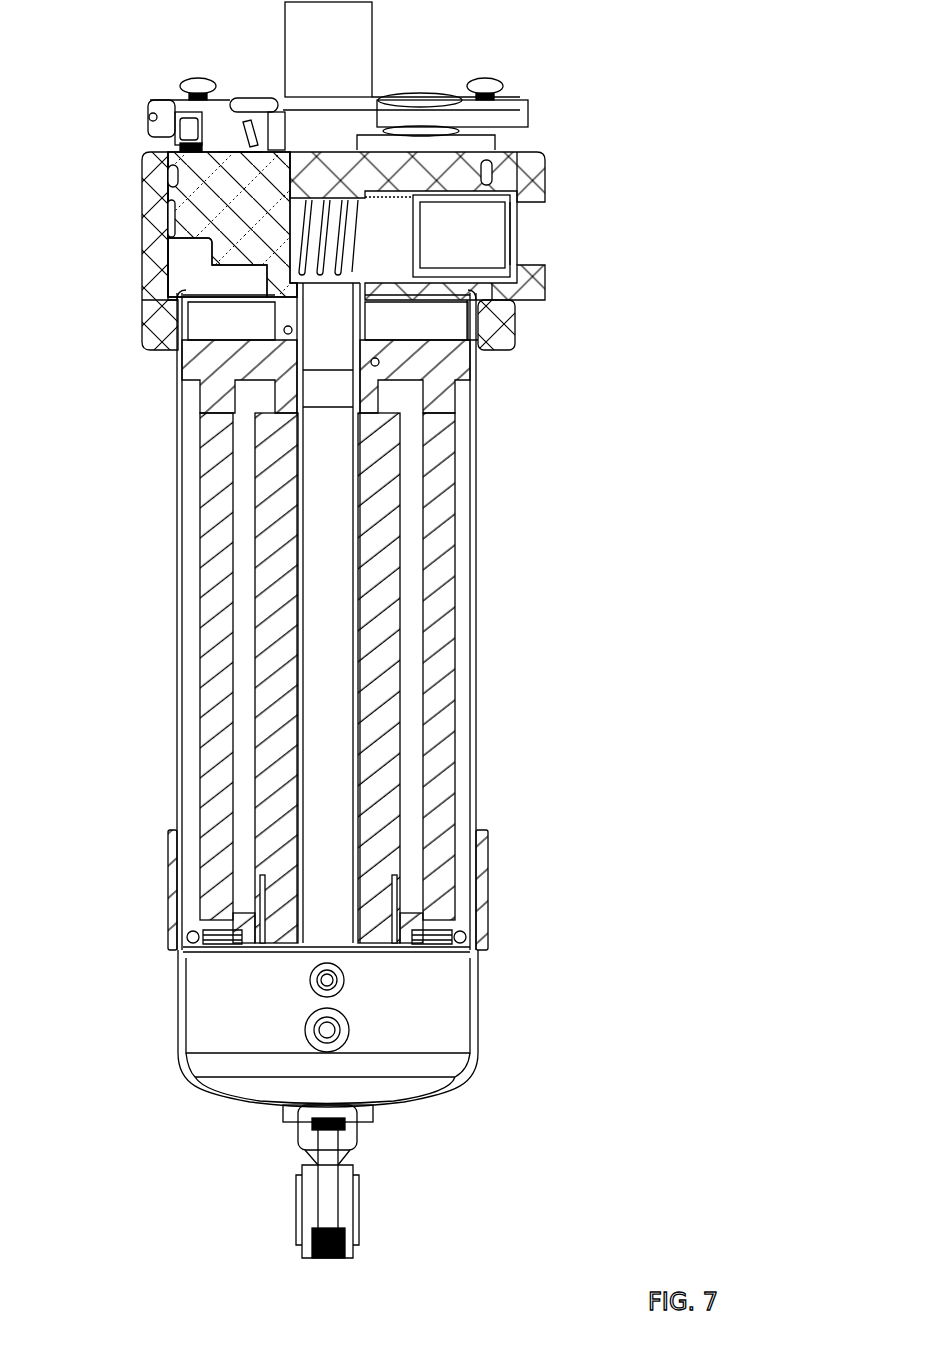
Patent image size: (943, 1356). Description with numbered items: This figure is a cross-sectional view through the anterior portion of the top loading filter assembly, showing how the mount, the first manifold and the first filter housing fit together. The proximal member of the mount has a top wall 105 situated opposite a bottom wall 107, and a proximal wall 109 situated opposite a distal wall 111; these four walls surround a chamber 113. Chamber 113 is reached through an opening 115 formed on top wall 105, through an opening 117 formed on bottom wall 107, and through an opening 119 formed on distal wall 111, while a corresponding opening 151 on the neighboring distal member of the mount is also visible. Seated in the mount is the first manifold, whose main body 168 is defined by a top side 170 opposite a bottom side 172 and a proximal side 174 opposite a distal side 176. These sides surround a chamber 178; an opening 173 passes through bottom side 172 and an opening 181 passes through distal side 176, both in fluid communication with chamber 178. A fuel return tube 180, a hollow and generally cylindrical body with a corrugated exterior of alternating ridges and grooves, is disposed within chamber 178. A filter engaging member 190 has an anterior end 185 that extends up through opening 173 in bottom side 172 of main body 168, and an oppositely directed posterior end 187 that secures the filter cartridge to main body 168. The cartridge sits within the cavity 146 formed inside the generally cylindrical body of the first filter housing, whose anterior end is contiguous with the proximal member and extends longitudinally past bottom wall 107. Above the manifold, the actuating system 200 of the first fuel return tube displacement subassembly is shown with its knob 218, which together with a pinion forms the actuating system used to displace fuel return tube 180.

The actuating system 200 is at (503, 53).
The knob 218 is at (450, 122).
The top side 170 is at (167, 151).
The main body 168 is at (336, 163).
The top wall 105 is at (150, 160).
The proximal side 174 is at (143, 196).
The proximal wall 109 is at (140, 249).
The chamber 178 is at (297, 240).
The opening 181 is at (550, 213).
The fuel return tube 180 is at (494, 240).
The opening 115 is at (492, 167).
The distal wall 111 is at (547, 177).
The opening 119 is at (548, 257).
The distal side 176 is at (546, 288).
The bottom wall 107 is at (503, 352).
The chamber 113 is at (200, 297).
The bottom side 172 is at (278, 300).
The opening 173 is at (272, 322).
The posterior end 187 is at (315, 375).
The anterior end 185 is at (338, 283).
The filter engaging member 190 is at (362, 327).
The cavity 146 is at (190, 722).
The opening 117 is at (481, 360).
The opening 151 is at (440, 744).